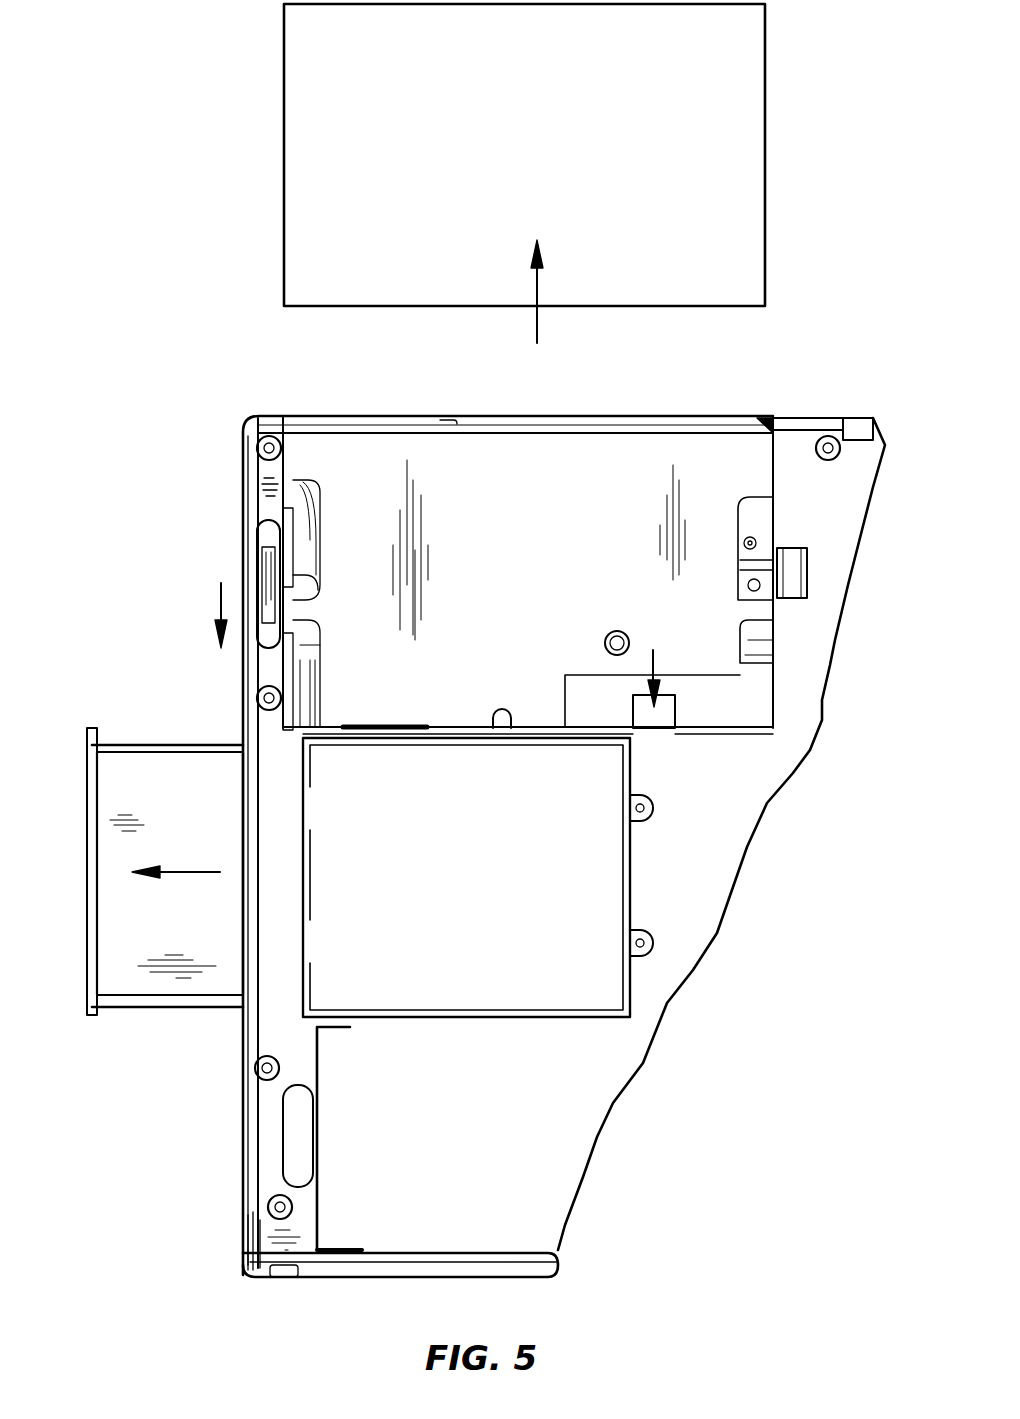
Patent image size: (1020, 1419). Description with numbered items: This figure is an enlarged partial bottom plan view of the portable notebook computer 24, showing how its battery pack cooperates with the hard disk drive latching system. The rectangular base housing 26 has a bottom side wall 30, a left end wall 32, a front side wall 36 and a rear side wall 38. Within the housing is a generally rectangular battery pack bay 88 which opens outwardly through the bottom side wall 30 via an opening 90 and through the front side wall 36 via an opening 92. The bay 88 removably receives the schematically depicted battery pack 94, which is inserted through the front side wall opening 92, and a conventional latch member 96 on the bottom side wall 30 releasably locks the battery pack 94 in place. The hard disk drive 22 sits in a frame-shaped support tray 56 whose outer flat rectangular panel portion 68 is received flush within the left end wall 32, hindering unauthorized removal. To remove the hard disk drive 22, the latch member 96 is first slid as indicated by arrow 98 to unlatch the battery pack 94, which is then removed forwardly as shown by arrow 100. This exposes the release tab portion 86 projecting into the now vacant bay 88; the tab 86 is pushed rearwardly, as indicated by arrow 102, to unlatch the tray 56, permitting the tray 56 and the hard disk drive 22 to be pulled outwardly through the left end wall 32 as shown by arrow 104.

The battery pack 94 is at (548, 175).
The arrow 100 is at (538, 290).
The portable notebook computer 24 is at (210, 481).
The battery pack bay 88 is at (556, 456).
The opening 92 is at (760, 422).
The front side wall 36 is at (800, 415).
The base housing 26 is at (832, 425).
The latch member 96 is at (262, 575).
The arrow 98 is at (219, 602).
The support tray 56 is at (200, 730).
The panel portion 68 is at (87, 820).
The hard disk drive 22 is at (188, 814).
The arrow 104 is at (187, 873).
The opening 90 is at (497, 728).
The arrow 102 is at (653, 650).
The release tab portion 86 is at (672, 705).
The bottom side wall 30 is at (470, 1113).
The left end wall 32 is at (247, 1200).
The rear side wall 38 is at (560, 1287).